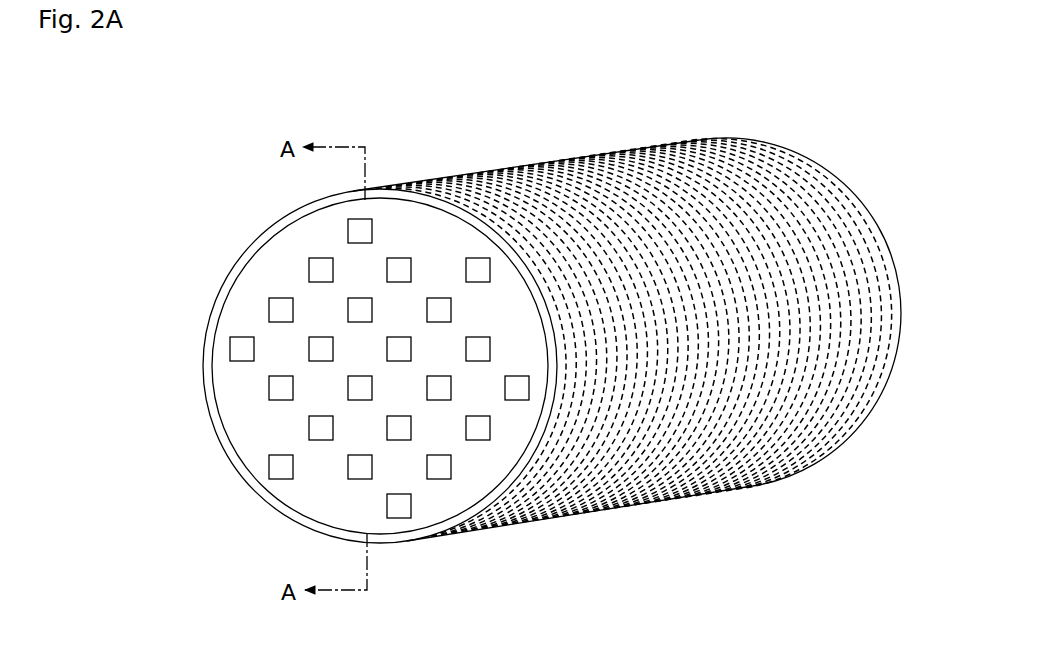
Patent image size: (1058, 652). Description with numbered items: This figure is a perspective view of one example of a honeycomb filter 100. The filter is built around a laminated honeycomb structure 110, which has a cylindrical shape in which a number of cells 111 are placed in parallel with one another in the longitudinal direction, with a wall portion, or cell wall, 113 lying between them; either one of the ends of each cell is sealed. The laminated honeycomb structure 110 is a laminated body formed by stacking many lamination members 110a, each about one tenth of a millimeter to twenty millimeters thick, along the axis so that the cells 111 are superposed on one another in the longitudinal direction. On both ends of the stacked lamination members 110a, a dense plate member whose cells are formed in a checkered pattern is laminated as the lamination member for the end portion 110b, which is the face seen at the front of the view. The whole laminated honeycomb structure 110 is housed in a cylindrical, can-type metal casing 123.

The honeycomb filter 100 is at (457, 162).
The laminated honeycomb structure 110 is at (215, 415).
The lamination member 110a is at (702, 470).
The lamination member for the end portion 110b is at (827, 168).
The cell 111 is at (403, 426).
The wall portion (cell wall) 113 is at (302, 290).
The metal casing 123 is at (685, 142).